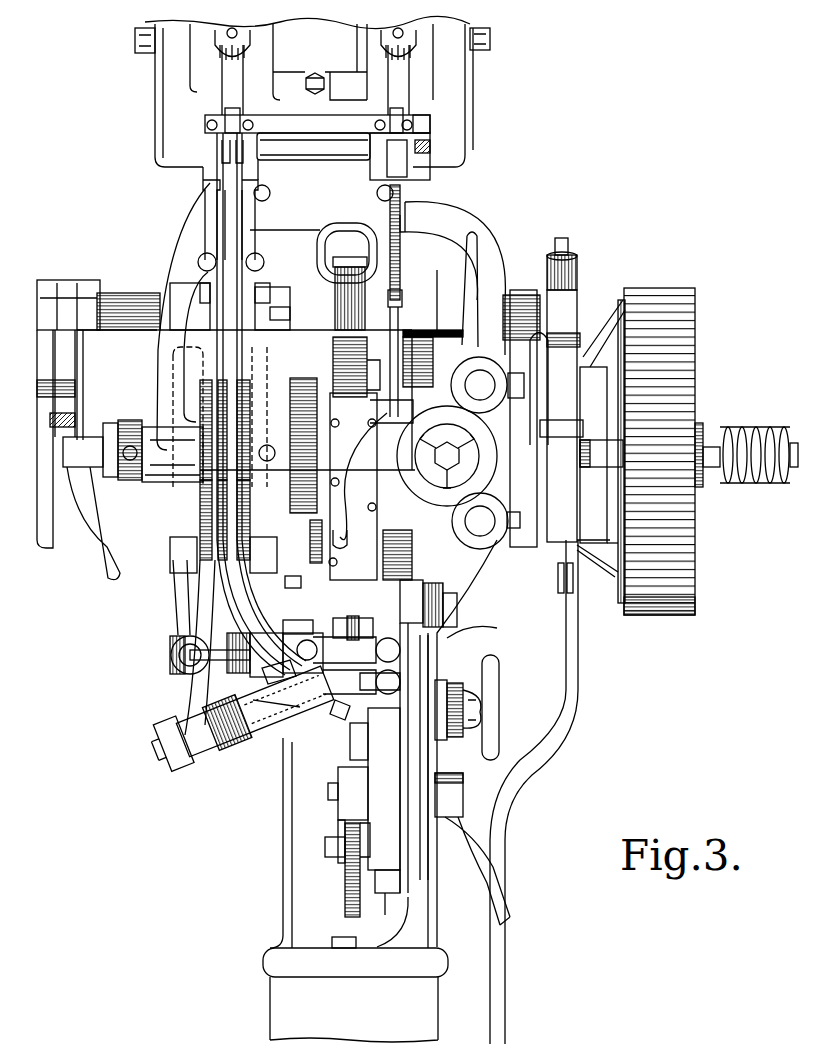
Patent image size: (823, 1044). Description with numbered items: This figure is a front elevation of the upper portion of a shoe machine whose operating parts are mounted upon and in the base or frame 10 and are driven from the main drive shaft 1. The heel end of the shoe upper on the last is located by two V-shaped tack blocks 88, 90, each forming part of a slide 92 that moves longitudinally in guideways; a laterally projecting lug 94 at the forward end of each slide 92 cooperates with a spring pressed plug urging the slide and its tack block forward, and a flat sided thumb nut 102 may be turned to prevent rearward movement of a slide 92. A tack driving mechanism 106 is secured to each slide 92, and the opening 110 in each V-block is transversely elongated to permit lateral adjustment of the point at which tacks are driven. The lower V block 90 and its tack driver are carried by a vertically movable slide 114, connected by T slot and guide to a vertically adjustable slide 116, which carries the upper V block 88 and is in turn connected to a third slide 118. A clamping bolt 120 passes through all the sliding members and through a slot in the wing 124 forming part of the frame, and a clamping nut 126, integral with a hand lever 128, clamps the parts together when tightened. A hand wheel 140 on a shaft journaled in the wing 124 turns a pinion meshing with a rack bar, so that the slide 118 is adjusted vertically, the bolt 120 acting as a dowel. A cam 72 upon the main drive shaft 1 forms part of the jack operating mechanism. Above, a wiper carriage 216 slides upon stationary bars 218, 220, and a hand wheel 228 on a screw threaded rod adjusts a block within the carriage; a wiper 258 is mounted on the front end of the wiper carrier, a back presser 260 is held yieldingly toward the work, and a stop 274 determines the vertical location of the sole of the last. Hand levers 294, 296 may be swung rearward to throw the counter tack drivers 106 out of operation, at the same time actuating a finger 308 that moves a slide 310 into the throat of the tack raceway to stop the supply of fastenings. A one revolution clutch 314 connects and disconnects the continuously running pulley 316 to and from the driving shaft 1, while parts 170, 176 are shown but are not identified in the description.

The main drive shaft 1 is at (740, 433).
The base or frame 10 is at (380, 791).
The cam 72 is at (302, 395).
The V-shaped tack block 88 is at (195, 640).
The V-shaped tack block 90 is at (340, 710).
The slide 92 is at (345, 722).
The laterally projecting lug 94 is at (370, 680).
The flat sided thumb nut 102 is at (470, 697).
The tack driving mechanism 106 is at (267, 705).
The opening in V-block 110 is at (253, 672).
The vertically movable slide 114 is at (357, 793).
The vertically adjustable slide 116 is at (372, 874).
The third slide 118 is at (402, 875).
The clamping bolt 120 is at (330, 795).
The wing 124 is at (417, 762).
The clamping nut 126 is at (453, 800).
The hand lever 128 is at (512, 923).
The hand wheel 140 is at (490, 740).
The pin 170 is at (347, 810).
The nut 176 is at (352, 880).
The wiper carriage 216 is at (447, 397).
The stationary bar 218 is at (483, 383).
The stationary bar 220 is at (482, 523).
The hand wheel 228 is at (482, 472).
The wiper 258 is at (450, 605).
The back presser 260 is at (453, 637).
The stop 274 is at (293, 583).
The hand lever 294 is at (48, 545).
The hand lever 296 is at (110, 543).
The finger 308 is at (206, 258).
The slide 310 is at (237, 153).
The one revolution clutch 314 is at (590, 417).
The continuously running pulley 316 is at (667, 428).